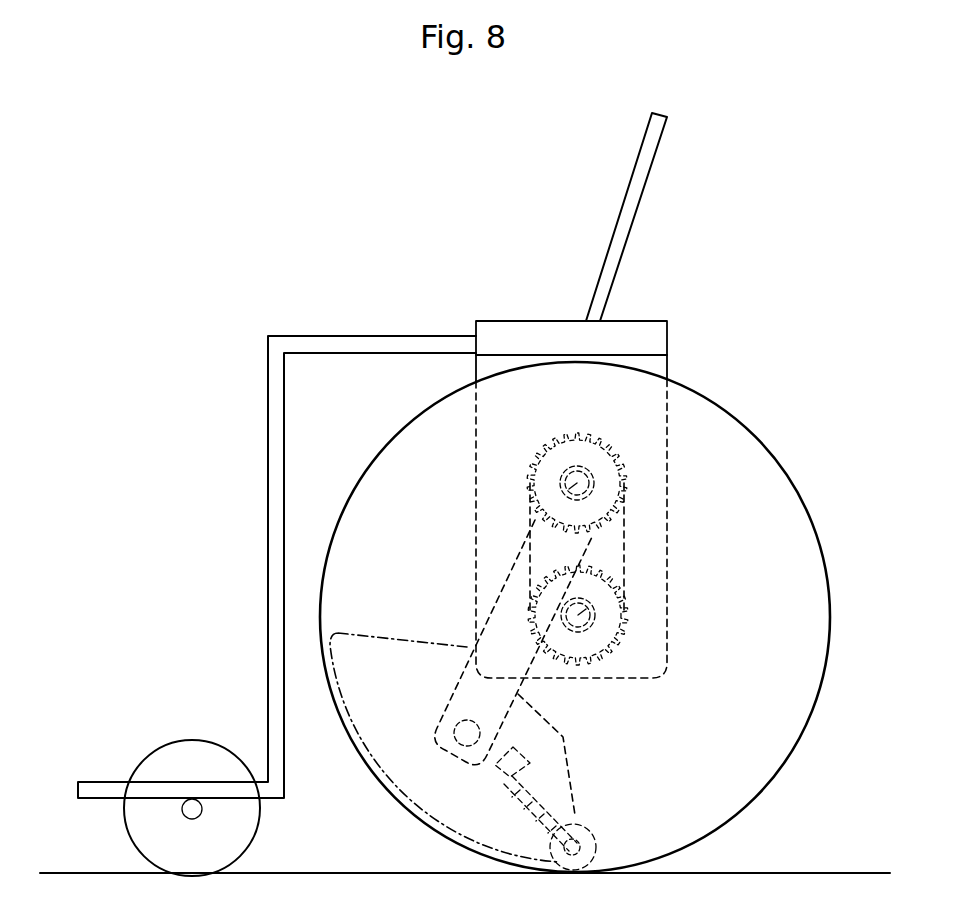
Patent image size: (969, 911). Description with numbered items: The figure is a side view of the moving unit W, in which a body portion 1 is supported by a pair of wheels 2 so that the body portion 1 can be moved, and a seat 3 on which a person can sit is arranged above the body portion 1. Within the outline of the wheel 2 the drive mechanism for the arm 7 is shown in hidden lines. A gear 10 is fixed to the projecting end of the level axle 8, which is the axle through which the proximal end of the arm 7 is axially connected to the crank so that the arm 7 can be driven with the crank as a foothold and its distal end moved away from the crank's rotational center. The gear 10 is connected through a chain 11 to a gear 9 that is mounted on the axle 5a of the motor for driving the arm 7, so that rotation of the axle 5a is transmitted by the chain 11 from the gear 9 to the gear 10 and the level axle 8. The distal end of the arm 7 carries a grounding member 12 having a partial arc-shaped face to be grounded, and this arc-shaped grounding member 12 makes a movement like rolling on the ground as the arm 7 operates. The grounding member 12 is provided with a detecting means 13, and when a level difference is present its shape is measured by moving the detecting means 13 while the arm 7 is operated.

The wheelbarrow W is at (373, 289).
The body portion 1 is at (682, 357).
The wheels 2 is at (788, 470).
The seat 3 is at (610, 236).
The axle of the motor 5a is at (590, 612).
The arm 7 is at (522, 691).
The level axle 8 is at (575, 487).
The gear 9 is at (620, 648).
The gear 10 is at (620, 457).
The chain 11 is at (624, 565).
The grounding member 12 is at (368, 633).
The detecting means 13 is at (562, 808).